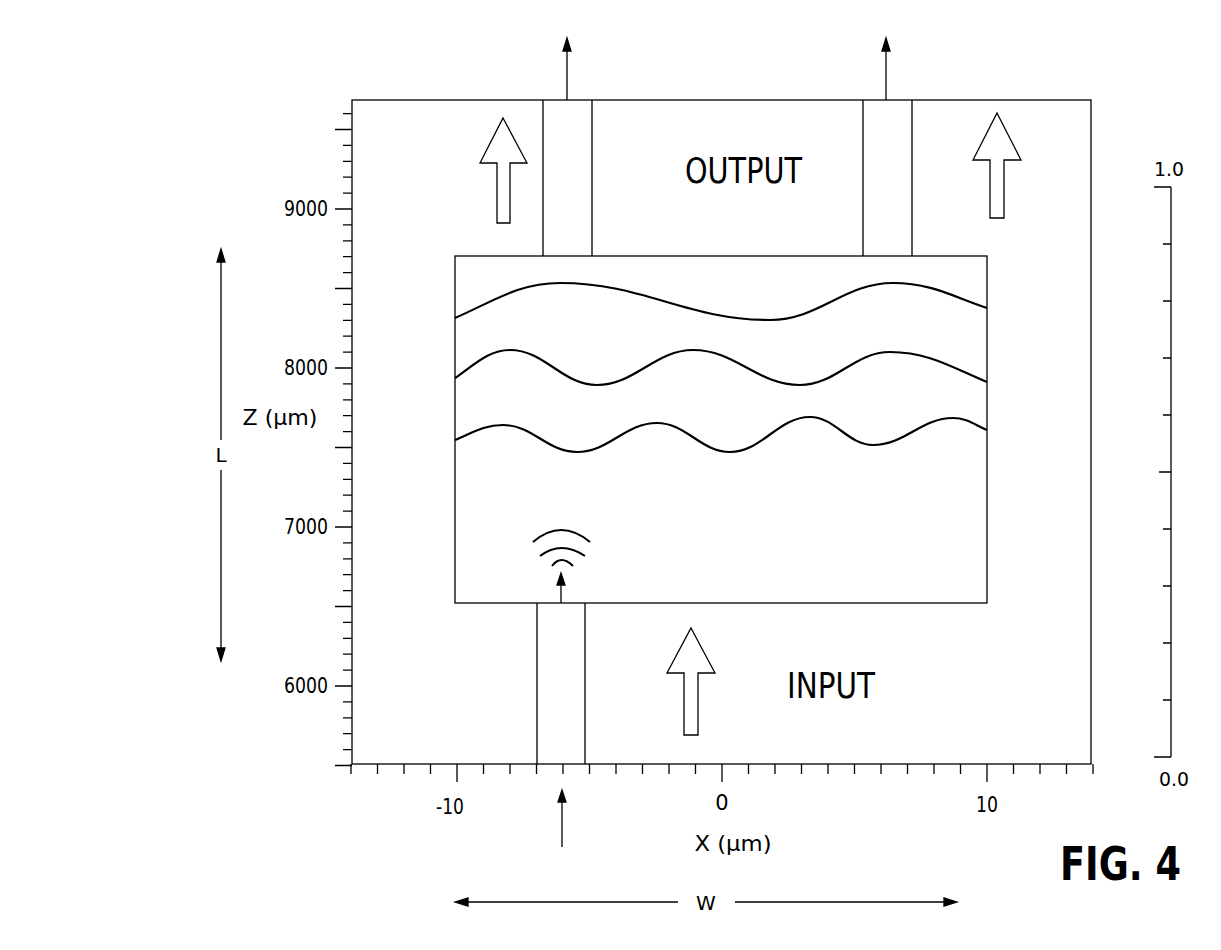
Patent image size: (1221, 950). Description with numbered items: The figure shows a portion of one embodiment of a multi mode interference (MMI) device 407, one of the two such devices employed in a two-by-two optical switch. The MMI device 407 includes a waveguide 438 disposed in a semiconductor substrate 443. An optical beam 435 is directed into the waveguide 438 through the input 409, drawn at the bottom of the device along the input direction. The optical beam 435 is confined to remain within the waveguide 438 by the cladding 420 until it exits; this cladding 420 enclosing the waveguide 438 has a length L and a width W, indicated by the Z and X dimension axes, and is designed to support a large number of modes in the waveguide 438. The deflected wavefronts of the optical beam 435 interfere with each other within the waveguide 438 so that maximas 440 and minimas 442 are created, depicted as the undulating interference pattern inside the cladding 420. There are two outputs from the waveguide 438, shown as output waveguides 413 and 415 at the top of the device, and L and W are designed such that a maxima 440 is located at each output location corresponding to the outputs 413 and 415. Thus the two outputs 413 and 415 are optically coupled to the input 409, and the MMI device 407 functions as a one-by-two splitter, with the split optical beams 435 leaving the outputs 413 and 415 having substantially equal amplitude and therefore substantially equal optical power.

The MMI device 407 is at (1031, 100).
The input 409 is at (548, 765).
The output waveguide 413 is at (545, 100).
The output waveguide 415 is at (897, 100).
The cladding 420 is at (455, 332).
The optical beam 435 is at (567, 72).
The waveguide 438 is at (468, 253).
The maxima 440 is at (590, 284).
The minima 442 is at (458, 320).
The semiconductor substrate 443 is at (1020, 208).